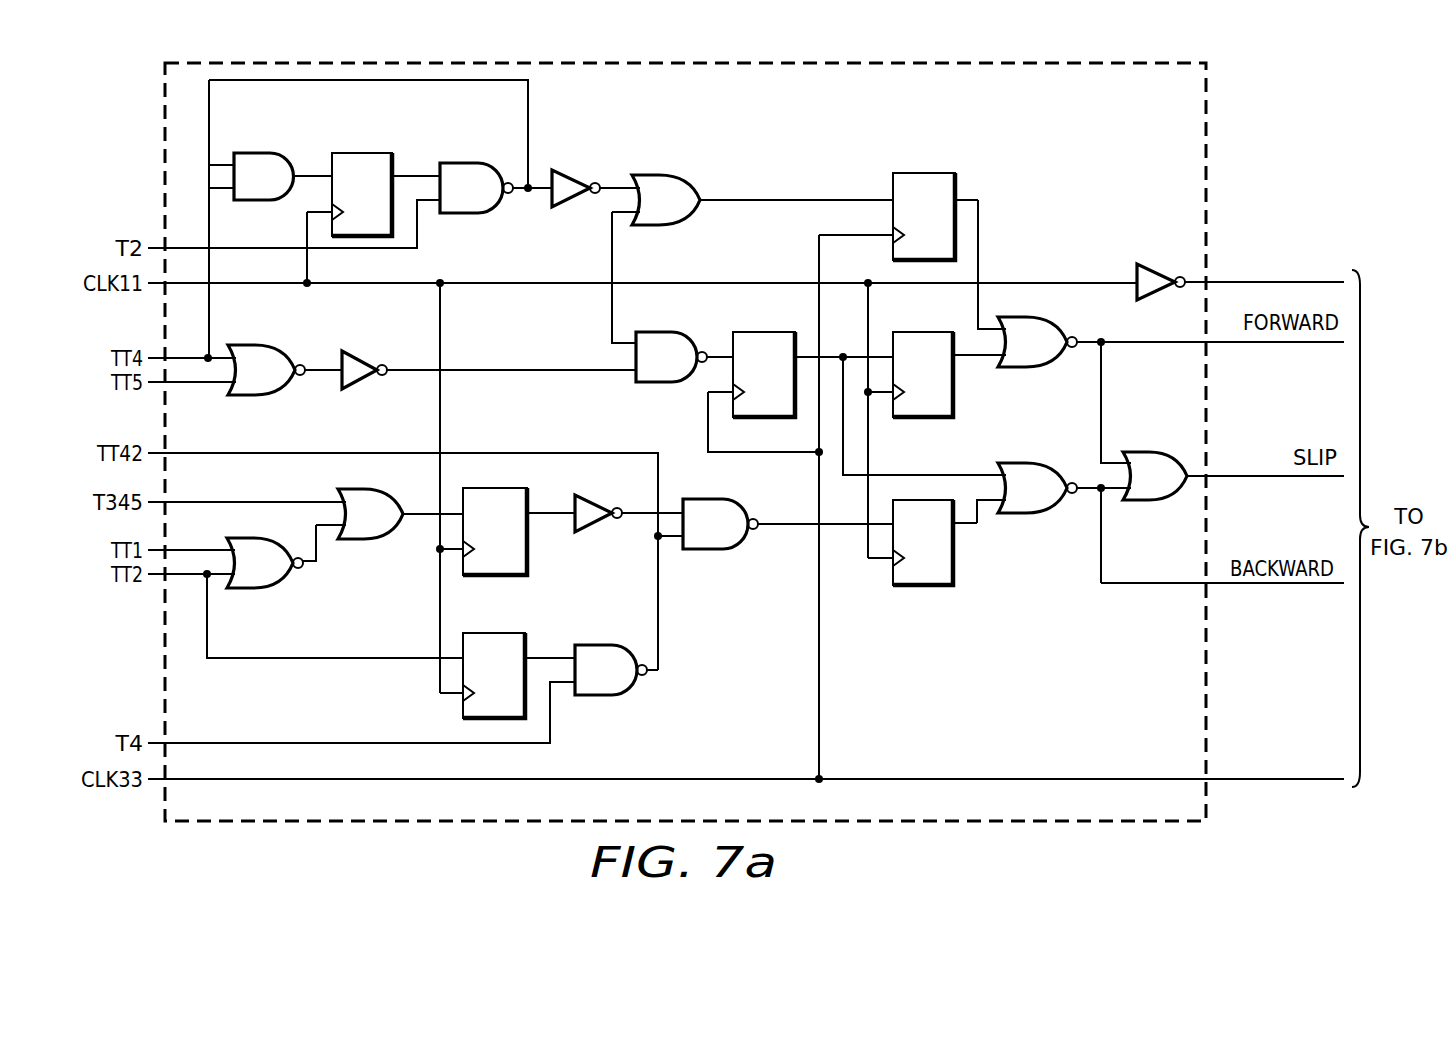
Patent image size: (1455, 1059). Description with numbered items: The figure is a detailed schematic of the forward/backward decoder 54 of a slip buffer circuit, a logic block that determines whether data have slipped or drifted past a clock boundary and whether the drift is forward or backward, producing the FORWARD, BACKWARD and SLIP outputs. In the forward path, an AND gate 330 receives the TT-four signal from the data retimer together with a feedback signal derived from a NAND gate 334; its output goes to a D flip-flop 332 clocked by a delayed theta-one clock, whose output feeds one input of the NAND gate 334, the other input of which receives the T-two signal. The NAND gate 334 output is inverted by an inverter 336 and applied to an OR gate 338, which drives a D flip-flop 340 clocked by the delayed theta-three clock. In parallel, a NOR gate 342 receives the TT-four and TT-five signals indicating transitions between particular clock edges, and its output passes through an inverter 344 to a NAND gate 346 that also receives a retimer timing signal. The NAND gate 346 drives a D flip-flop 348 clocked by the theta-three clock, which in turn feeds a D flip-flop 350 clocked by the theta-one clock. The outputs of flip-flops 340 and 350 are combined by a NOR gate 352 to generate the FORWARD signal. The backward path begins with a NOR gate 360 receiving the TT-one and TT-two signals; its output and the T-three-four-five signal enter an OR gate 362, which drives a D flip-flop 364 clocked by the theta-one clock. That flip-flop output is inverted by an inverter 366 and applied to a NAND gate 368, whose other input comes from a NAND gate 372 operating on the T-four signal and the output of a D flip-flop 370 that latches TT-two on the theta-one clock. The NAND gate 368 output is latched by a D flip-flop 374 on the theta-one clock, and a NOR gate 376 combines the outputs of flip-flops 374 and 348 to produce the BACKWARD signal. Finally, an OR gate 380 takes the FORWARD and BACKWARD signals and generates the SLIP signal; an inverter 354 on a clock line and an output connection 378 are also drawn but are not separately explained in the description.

The forward/backward decoder 54 is at (1042, 822).
The AND gate 330 is at (266, 153).
The D flip-flop 332 is at (368, 152).
The NAND gate 334 is at (465, 162).
The inverter 336 is at (570, 170).
The OR gate 338 is at (656, 175).
The D flip-flop 340 is at (924, 172).
The NOR gate 342 is at (262, 345).
The inverter 344 is at (362, 390).
The NAND gate 346 is at (650, 383).
The D flip-flop 348 is at (770, 332).
The D flip-flop 350 is at (955, 410).
The NOR gate 352 is at (1032, 368).
The inverter 354 is at (1117, 340).
The NOR gate 360 is at (278, 589).
The OR gate 362 is at (372, 541).
The D flip-flop 364 is at (508, 575).
The inverter 366 is at (590, 530).
The NAND gate 368 is at (705, 550).
The D flip-flop 370 is at (460, 708).
The NAND gate 372 is at (598, 697).
The D flip-flop 374 is at (913, 586).
The NOR gate 376 is at (1028, 514).
The BACKWARD output line 378 is at (1127, 584).
The OR gate 380 is at (1152, 452).